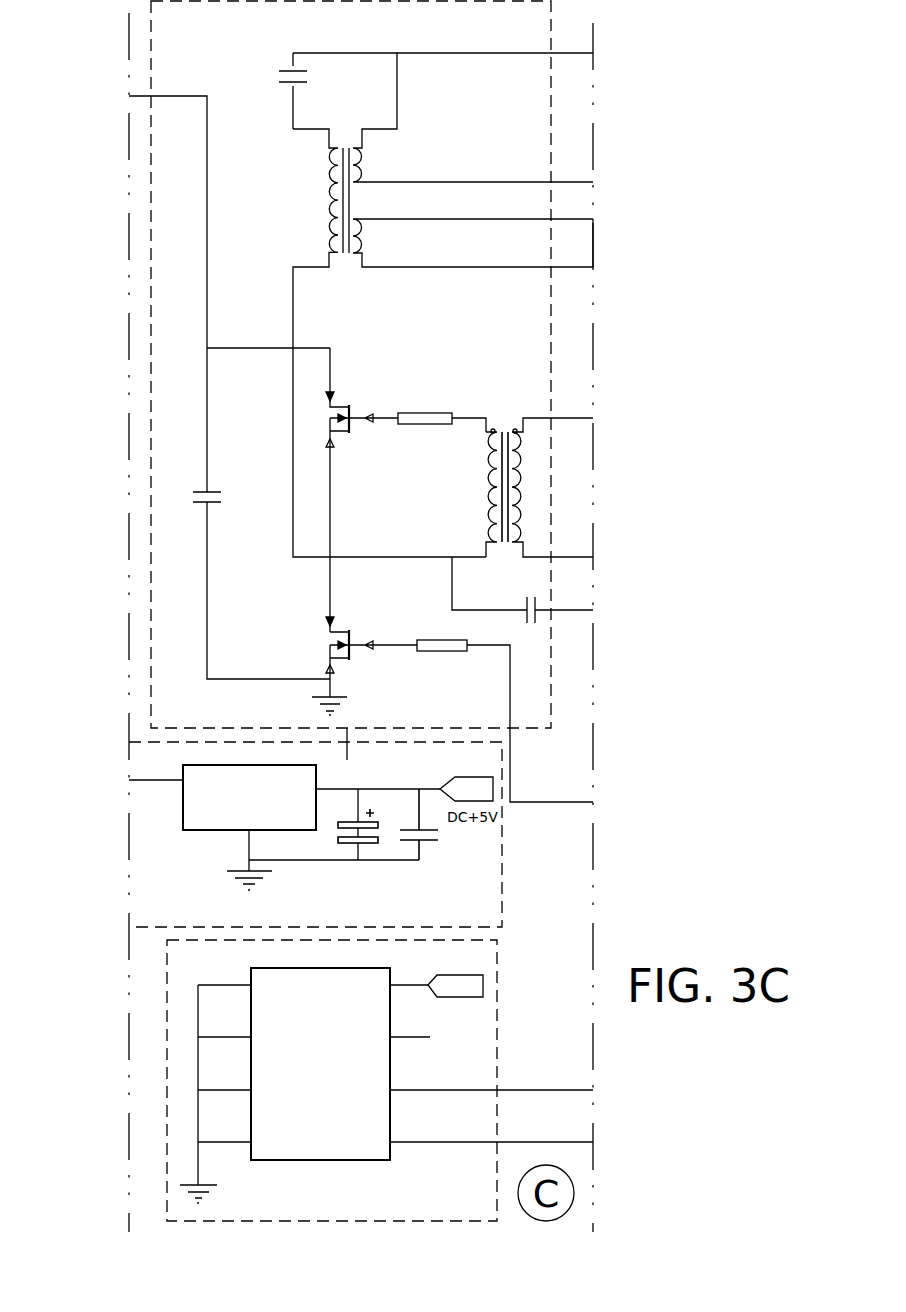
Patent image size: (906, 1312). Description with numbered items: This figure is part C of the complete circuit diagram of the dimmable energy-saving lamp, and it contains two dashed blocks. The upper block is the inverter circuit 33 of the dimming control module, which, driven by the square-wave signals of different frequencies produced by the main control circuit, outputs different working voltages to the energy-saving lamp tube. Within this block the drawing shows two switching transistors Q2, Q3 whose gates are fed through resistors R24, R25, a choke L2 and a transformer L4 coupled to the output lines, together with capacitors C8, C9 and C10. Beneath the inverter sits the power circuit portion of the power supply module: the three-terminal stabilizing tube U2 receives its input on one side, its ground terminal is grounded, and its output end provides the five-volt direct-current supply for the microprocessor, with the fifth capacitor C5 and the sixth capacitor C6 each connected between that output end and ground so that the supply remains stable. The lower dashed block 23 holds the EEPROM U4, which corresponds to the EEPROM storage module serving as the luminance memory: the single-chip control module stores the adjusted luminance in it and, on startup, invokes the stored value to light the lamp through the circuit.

The inverter circuit 33 is at (150, 48).
The EEPROM memory circuit 23 is at (168, 1131).
The 3-terminal stabilizing tube U2 is at (284, 810).
The EEPROM U4 is at (386, 1085).
The 5th capacitor C5 is at (357, 824).
The 6th capacitor C6 is at (420, 824).
The capacitor C8 is at (429, 74).
The capacitor C9 is at (227, 480).
The capacitor C10 is at (522, 593).
The choke L2 is at (443, 305).
The transformer L4 is at (528, 475).
The MOSFET Q2 is at (362, 490).
The MOSFET Q3 is at (364, 656).
The resistor R24 is at (442, 408).
The resistor R25 is at (502, 706).